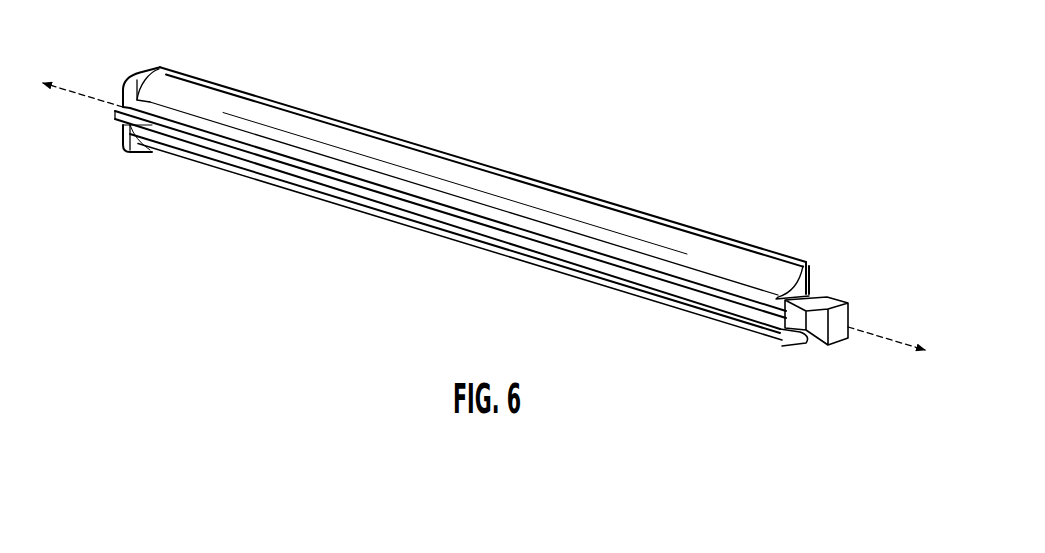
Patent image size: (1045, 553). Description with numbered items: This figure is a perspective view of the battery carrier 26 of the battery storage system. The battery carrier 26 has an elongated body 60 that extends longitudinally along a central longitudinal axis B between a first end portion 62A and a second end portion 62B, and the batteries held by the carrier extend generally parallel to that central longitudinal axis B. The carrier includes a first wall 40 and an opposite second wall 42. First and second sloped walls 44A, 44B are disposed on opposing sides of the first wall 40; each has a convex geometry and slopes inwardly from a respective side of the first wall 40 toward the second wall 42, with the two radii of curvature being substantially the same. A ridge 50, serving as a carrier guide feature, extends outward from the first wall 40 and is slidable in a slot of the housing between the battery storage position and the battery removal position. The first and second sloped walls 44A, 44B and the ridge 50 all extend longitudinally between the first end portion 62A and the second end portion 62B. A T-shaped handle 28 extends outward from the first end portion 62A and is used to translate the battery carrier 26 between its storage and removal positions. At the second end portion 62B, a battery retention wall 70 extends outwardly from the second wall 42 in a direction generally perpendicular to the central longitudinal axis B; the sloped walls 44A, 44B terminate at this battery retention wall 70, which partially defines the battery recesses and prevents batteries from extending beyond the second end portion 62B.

The battery carrier 26 is at (563, 152).
The T-shaped handle 28 is at (834, 303).
The first wall 40 is at (779, 328).
The second wall 42 is at (208, 77).
The first sloped wall 44A is at (312, 130).
The second sloped wall 44B is at (787, 342).
The ridge 50 is at (686, 290).
The elongated body 60 is at (446, 147).
The first end portion 62A is at (812, 278).
The second end portion 62B is at (120, 78).
The battery retention wall 70 is at (143, 90).
The central longitudinal axis B is at (883, 340).